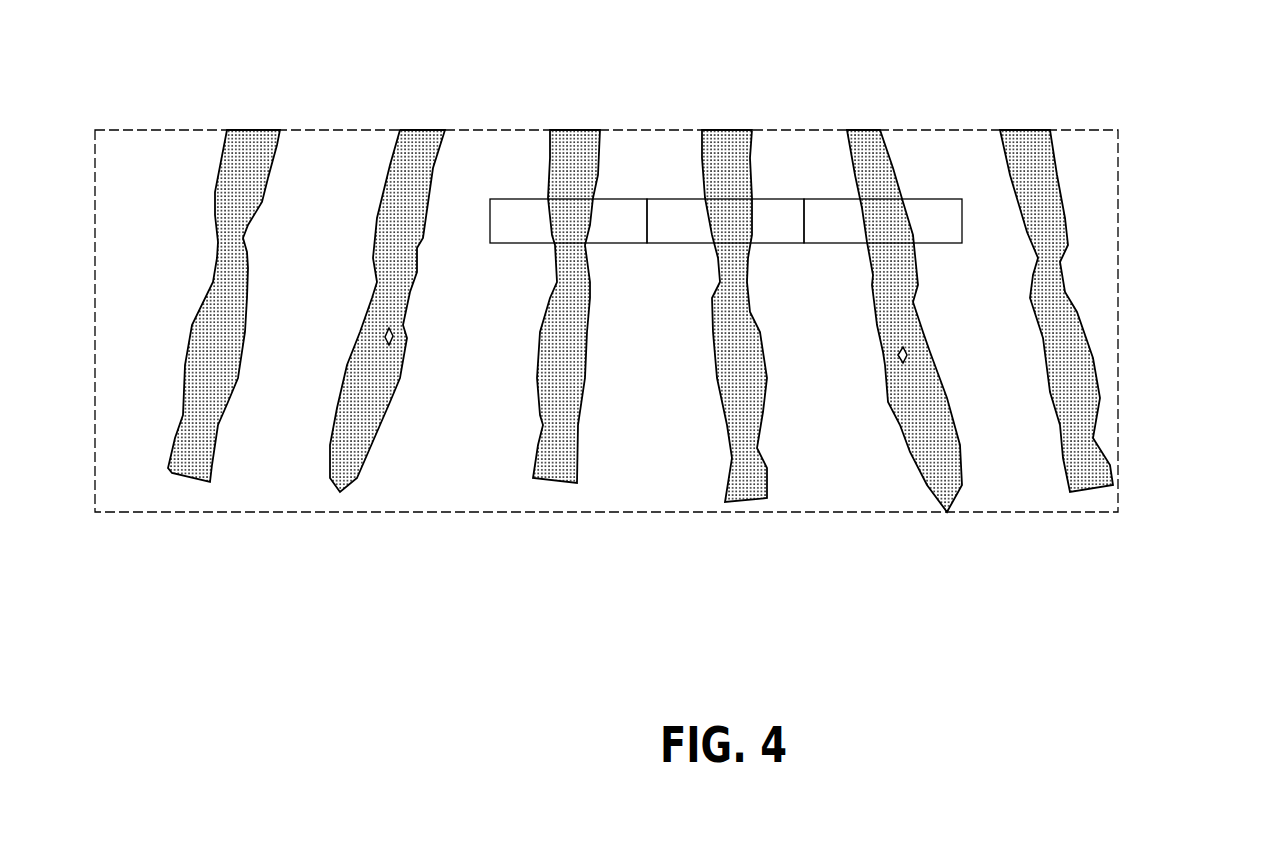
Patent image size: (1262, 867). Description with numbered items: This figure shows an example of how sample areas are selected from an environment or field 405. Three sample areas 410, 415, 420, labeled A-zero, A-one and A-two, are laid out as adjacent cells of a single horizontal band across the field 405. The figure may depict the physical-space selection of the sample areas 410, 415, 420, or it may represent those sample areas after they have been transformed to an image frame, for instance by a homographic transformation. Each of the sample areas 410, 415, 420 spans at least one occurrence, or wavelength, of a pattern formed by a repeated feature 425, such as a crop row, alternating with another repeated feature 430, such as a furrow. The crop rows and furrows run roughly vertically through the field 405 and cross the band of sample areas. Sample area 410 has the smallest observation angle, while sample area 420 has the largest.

The environment or field 405 is at (1120, 80).
The sample area 410 is at (522, 193).
The sample area 415 is at (692, 192).
The sample area 420 is at (838, 192).
The repeated feature 425 is at (208, 192).
The repeated feature 430 is at (325, 262).